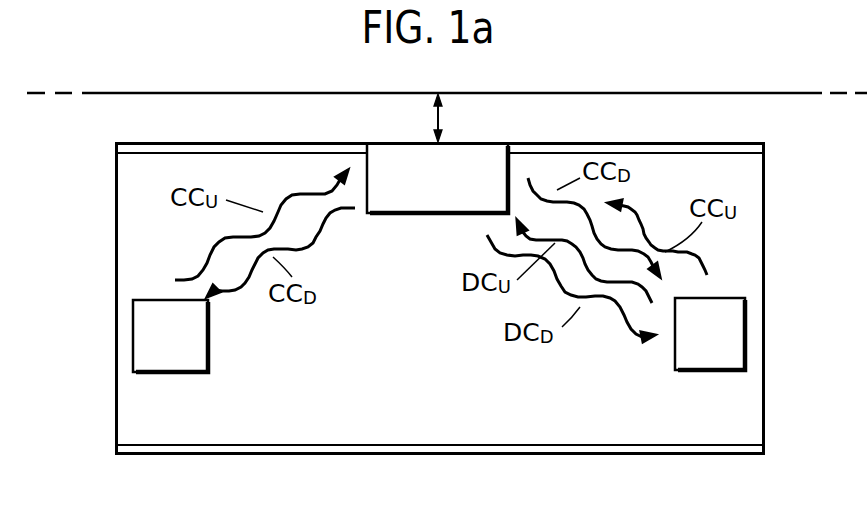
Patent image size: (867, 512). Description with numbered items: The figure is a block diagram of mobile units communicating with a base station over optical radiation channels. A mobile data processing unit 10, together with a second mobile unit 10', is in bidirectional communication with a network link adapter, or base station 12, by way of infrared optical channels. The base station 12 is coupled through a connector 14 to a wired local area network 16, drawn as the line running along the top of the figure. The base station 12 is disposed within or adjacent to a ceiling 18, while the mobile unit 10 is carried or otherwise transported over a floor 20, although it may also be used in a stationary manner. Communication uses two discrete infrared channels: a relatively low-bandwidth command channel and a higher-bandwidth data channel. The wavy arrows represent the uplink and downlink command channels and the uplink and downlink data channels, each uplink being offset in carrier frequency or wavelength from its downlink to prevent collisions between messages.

The mobile data processing unit 10 is at (664, 363).
The mobile data processing unit 10' is at (197, 339).
The base station 12 is at (475, 143).
The connector 14 is at (436, 120).
The wired local area network 16 is at (315, 93).
The ceiling 18 is at (725, 143).
The floor 20 is at (406, 445).